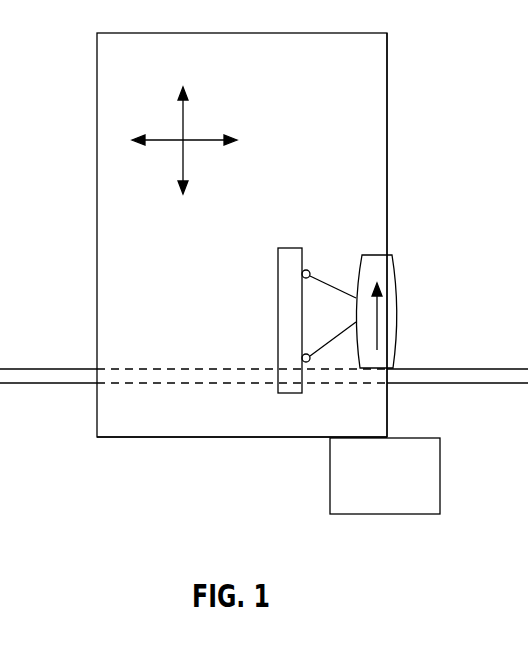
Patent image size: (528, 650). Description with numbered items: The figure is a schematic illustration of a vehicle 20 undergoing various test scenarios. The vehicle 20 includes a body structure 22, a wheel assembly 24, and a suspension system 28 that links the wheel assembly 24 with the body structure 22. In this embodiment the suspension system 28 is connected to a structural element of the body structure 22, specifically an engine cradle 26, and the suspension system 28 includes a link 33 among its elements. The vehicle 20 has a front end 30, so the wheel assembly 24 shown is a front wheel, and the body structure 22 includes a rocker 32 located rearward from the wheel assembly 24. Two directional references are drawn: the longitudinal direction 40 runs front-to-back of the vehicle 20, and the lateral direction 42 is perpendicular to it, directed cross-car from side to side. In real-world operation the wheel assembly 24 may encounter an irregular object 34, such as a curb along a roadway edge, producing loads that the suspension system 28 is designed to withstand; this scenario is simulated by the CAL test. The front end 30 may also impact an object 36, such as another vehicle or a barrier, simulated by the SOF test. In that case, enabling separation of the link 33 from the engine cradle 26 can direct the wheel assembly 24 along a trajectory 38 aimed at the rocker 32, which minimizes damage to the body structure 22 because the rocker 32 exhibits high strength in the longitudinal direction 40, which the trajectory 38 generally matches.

The vehicle 20 is at (328, 16).
The body structure 22 is at (97, 160).
The wheel assembly 24 is at (397, 268).
The engine cradle 26 is at (278, 320).
The suspension system 28 is at (321, 272).
The front end 30 is at (245, 438).
The rocker 32 is at (388, 228).
The link 33 is at (307, 270).
The object 34 is at (460, 384).
The object 36 is at (440, 475).
The trajectory 38 is at (393, 312).
The longitudinal direction 40 is at (186, 116).
The lateral direction 42 is at (164, 138).